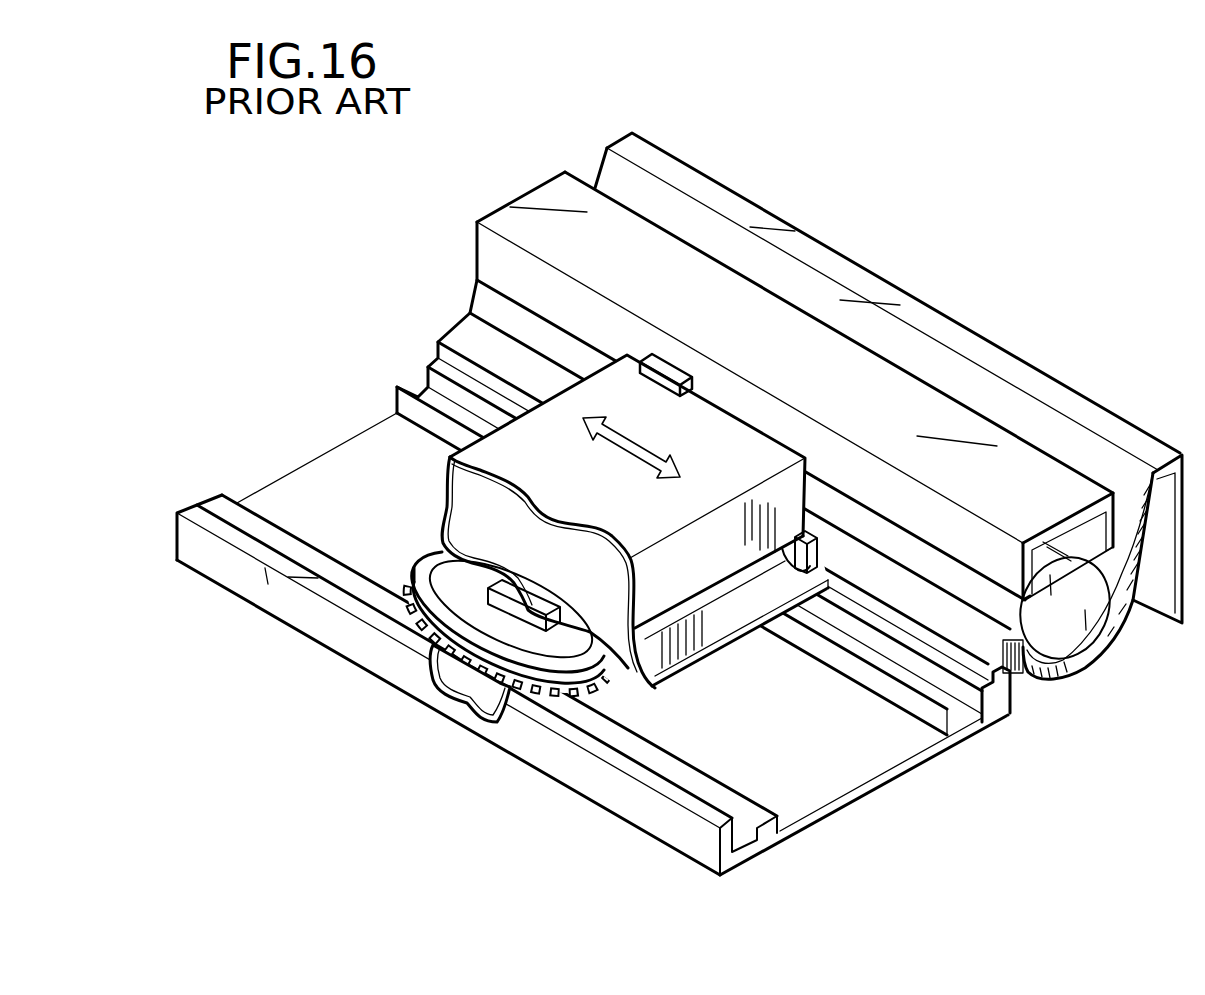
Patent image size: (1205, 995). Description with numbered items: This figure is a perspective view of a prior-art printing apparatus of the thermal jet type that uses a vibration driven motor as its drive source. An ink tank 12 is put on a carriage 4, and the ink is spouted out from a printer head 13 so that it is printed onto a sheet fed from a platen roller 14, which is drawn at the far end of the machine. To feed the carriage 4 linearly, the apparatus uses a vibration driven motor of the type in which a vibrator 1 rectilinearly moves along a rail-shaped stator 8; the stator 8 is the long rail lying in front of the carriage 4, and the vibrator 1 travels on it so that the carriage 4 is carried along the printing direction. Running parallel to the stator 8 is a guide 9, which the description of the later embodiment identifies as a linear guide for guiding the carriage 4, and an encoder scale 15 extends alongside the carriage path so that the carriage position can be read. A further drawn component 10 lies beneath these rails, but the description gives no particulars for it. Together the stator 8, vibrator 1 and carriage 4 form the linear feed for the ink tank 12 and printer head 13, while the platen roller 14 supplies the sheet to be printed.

The vibrator 1 is at (607, 674).
The carriage 4 is at (718, 630).
The rail-shaped stator 8 is at (706, 786).
The linear guide 9 is at (984, 696).
The base plate 10 is at (864, 778).
The ink tank 12 is at (734, 432).
The printer head 13 is at (678, 373).
The platen roller 14 is at (1078, 650).
The encoder scale 15 is at (945, 728).